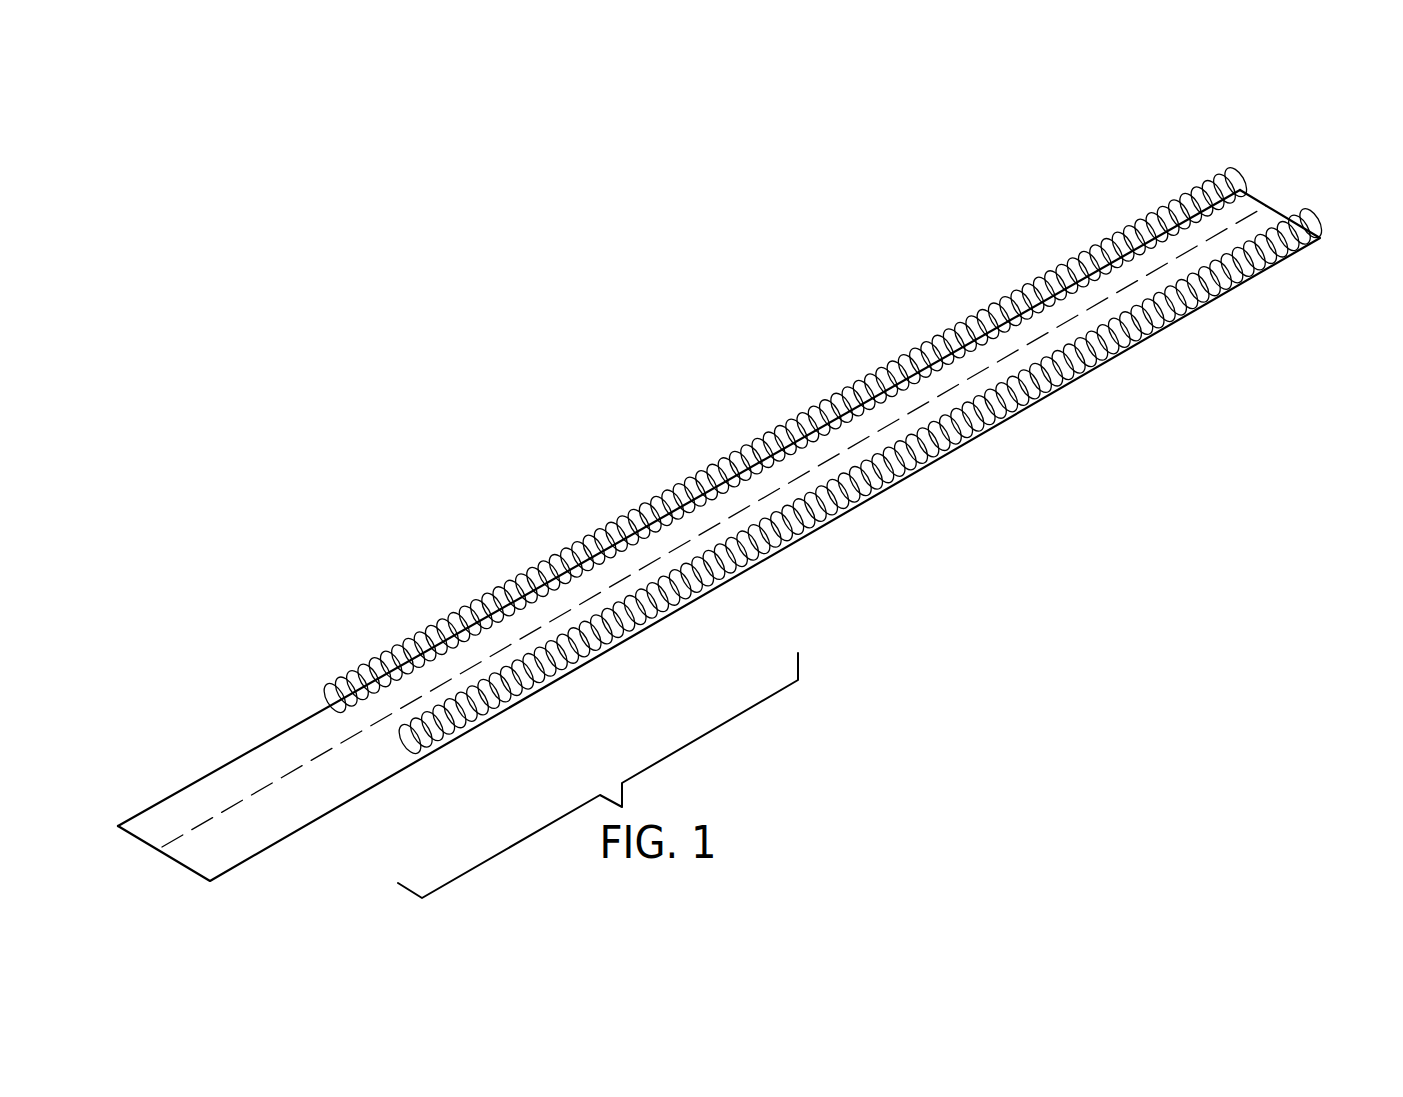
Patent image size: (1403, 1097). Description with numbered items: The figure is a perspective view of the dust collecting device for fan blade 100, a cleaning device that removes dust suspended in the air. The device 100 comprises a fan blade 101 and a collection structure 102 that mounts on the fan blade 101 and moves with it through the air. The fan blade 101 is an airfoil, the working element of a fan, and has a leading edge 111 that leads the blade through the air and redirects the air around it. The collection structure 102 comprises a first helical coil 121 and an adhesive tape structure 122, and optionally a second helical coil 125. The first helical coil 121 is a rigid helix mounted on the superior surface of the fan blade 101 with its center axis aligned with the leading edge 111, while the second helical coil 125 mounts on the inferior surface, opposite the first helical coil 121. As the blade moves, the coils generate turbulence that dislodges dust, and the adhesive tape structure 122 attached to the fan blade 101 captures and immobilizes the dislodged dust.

The dust collecting device for fan blade 100 is at (751, 504).
The fan blade 101 is at (719, 578).
The leading edge 111 is at (181, 787).
The collection structure 102 is at (773, 444).
The first helical coil 121 is at (1231, 173).
The adhesive tape structure 122 is at (730, 474).
The second helical coil 125 is at (1307, 227).